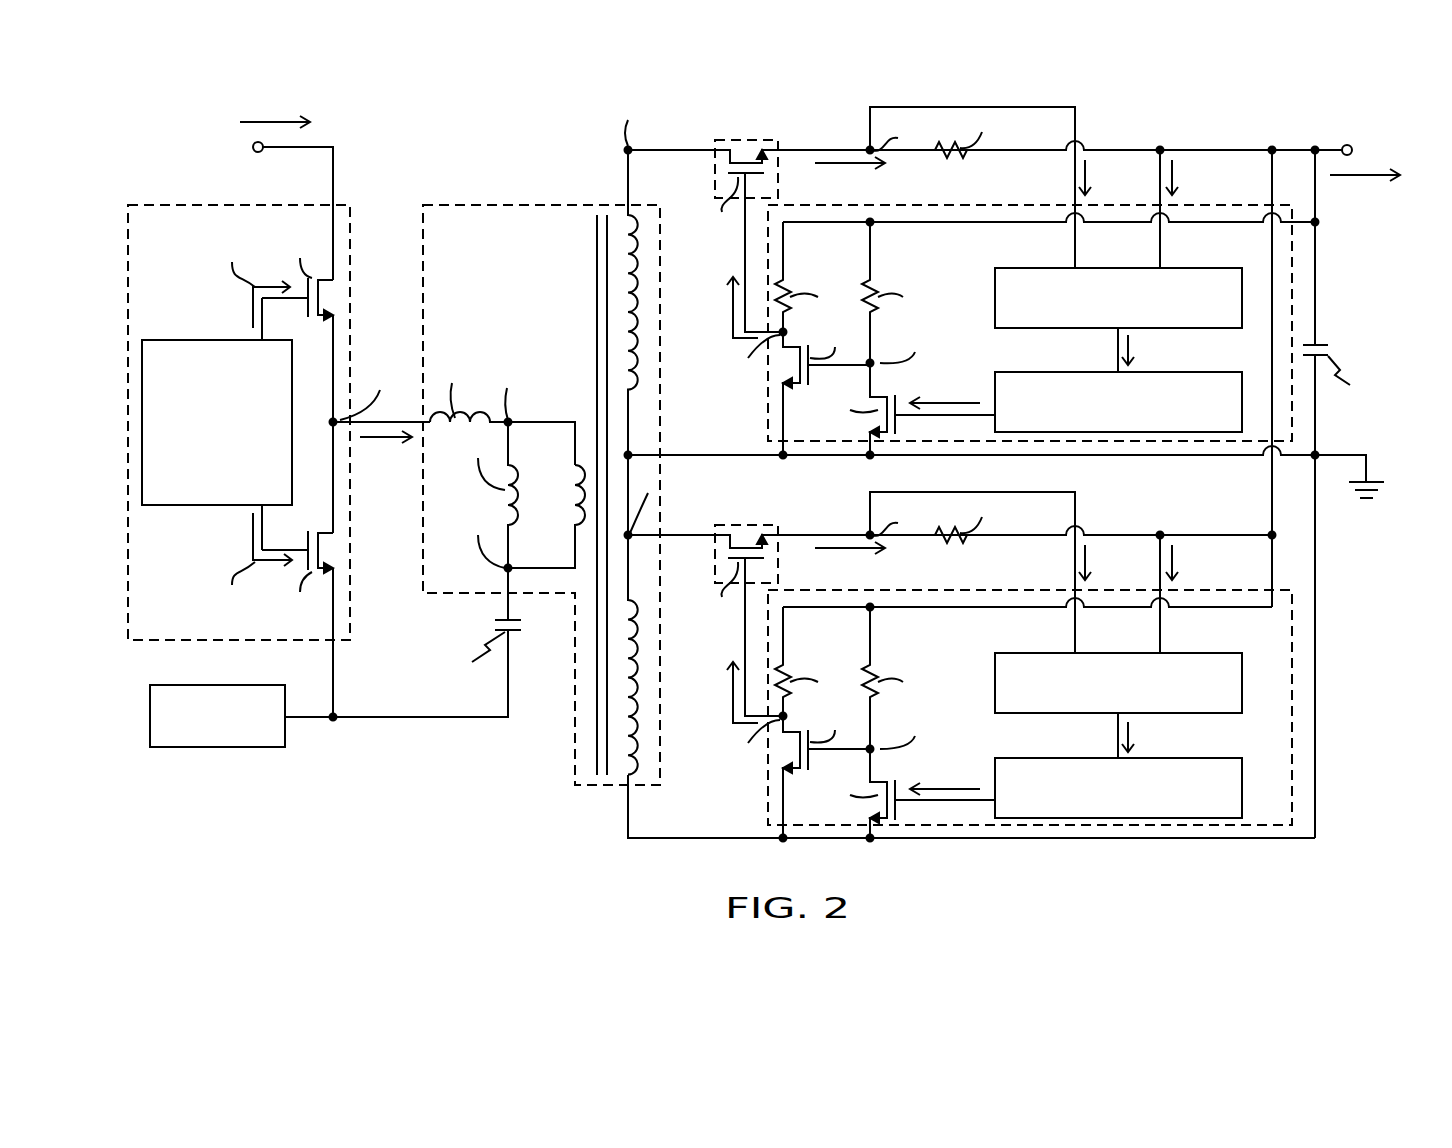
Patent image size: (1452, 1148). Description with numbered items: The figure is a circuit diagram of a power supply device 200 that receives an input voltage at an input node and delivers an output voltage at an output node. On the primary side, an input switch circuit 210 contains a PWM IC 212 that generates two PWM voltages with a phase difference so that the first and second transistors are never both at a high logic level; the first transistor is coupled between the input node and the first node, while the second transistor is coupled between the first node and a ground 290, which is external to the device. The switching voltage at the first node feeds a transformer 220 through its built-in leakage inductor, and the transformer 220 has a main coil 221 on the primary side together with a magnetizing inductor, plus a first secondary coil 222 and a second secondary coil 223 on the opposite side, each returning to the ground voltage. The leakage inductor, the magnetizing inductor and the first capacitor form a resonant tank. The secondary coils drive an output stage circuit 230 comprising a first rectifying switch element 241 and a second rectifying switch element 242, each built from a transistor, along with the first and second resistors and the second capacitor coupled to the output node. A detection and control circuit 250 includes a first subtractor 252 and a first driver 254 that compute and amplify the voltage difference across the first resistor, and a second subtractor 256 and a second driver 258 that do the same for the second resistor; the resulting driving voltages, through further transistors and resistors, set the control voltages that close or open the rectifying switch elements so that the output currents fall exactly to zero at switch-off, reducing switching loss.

The power supply device 200 is at (170, 110).
The input switch circuit 210 is at (130, 207).
The PWM IC 212 is at (142, 342).
The transformer 220 is at (425, 207).
The main coil 221 is at (573, 490).
The first secondary coil 222 is at (612, 252).
The second secondary coil 223 is at (612, 742).
The output stage circuit 230 is at (410, 757).
The first rectifying switch element 241 is at (780, 140).
The second rectifying switch element 242 is at (780, 525).
The detection and control circuit 250 is at (1292, 322).
The first subtractor 252 is at (997, 268).
The first driver 254 is at (997, 372).
The second subtractor 256 is at (997, 653).
The second driver 258 is at (997, 758).
The ground 290 is at (218, 748).